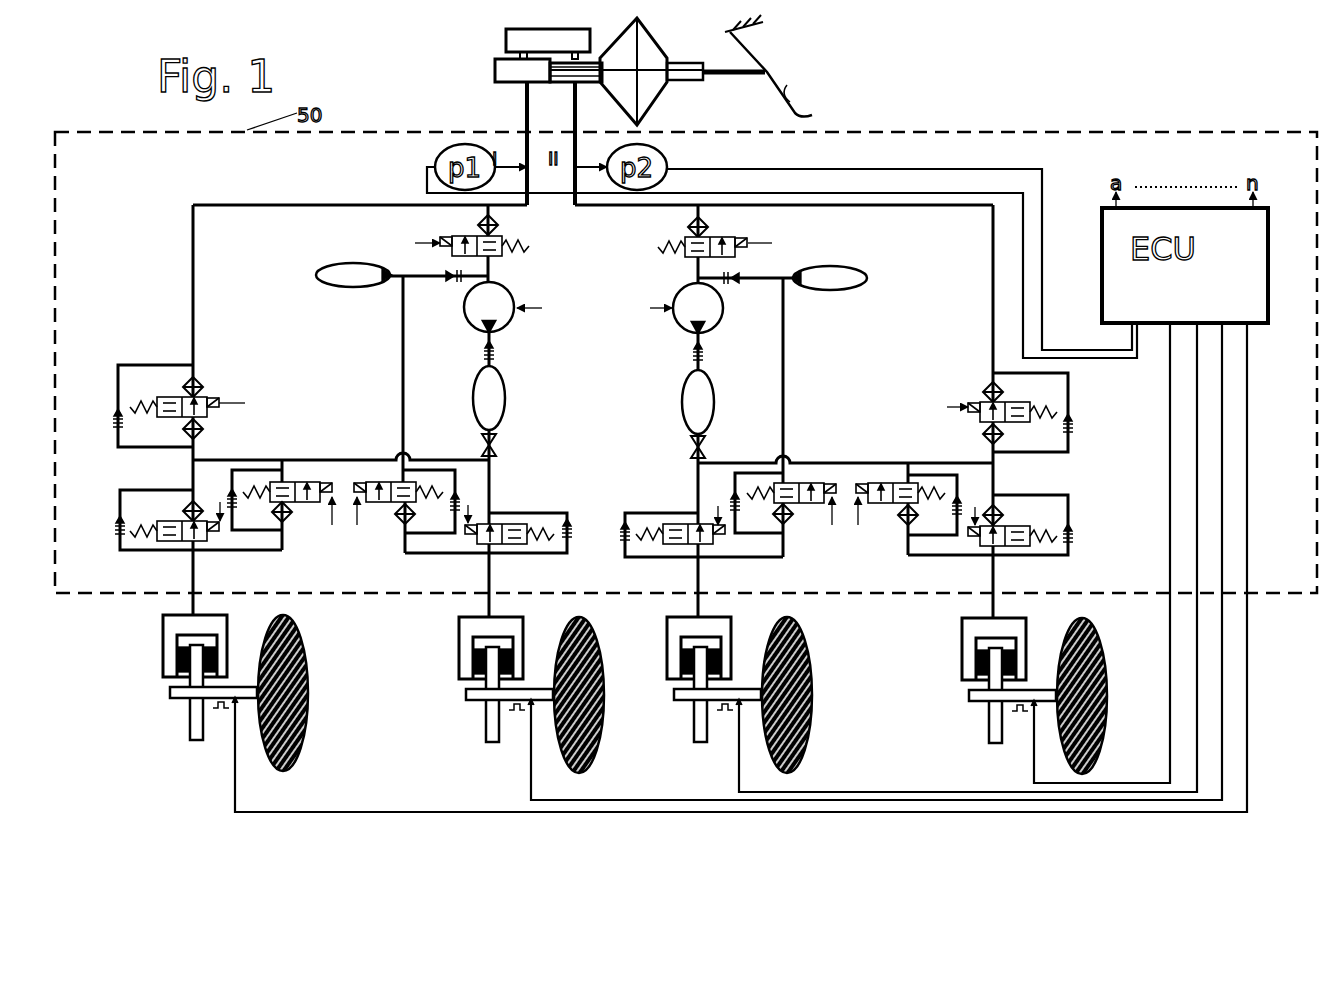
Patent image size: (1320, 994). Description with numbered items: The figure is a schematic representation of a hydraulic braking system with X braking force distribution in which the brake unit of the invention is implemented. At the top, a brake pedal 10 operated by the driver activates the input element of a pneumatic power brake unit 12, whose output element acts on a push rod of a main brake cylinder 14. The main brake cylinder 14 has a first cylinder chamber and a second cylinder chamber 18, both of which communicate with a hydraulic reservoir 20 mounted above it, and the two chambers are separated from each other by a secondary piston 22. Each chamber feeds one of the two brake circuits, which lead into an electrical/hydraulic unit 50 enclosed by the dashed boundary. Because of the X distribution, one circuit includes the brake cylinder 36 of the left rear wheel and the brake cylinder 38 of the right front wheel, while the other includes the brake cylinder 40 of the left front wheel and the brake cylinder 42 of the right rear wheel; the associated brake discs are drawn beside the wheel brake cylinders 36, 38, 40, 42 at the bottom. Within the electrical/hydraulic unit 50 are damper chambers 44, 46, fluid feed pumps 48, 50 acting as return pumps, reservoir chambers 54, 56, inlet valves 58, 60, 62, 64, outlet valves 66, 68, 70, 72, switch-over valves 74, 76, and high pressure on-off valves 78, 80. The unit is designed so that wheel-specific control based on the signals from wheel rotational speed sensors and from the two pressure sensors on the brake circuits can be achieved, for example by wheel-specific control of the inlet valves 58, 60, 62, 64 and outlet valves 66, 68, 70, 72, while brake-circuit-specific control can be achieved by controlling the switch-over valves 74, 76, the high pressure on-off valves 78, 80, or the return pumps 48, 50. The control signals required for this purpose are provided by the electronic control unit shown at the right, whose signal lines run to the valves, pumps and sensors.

The brake pedal 10 is at (770, 82).
The pneumatic power brake unit 12 is at (652, 86).
The main brake cylinder 14 is at (495, 82).
The second cylinder chamber 18 is at (510, 72).
The hydraulic reservoir 20 is at (545, 42).
The secondary piston 22 is at (598, 78).
The brake cylinder 36 is at (460, 642).
The brake cylinder 38 is at (163, 642).
The brake cylinder 40 is at (963, 650).
The brake cylinder 42 is at (668, 642).
The damper chamber 44 is at (506, 402).
The damper chamber 46 is at (682, 403).
The fluid feed pump 48 is at (464, 306).
The electrical/hydraulic unit 50 is at (720, 306).
The reservoir chamber 54 is at (347, 288).
The reservoir chamber 56 is at (828, 291).
The inlet valve 58 is at (499, 523).
The inlet valve 60 is at (178, 521).
The inlet valve 62 is at (1004, 526).
The inlet valve 64 is at (680, 524).
The outlet valve 66 is at (390, 483).
The outlet valve 68 is at (299, 483).
The outlet valve 70 is at (900, 483).
The outlet valve 72 is at (797, 483).
The switch-over valve 74 is at (470, 237).
The switch-over valve 76 is at (716, 241).
The high pressure on-off valve 78 is at (181, 396).
The high pressure on-off valve 80 is at (1012, 403).